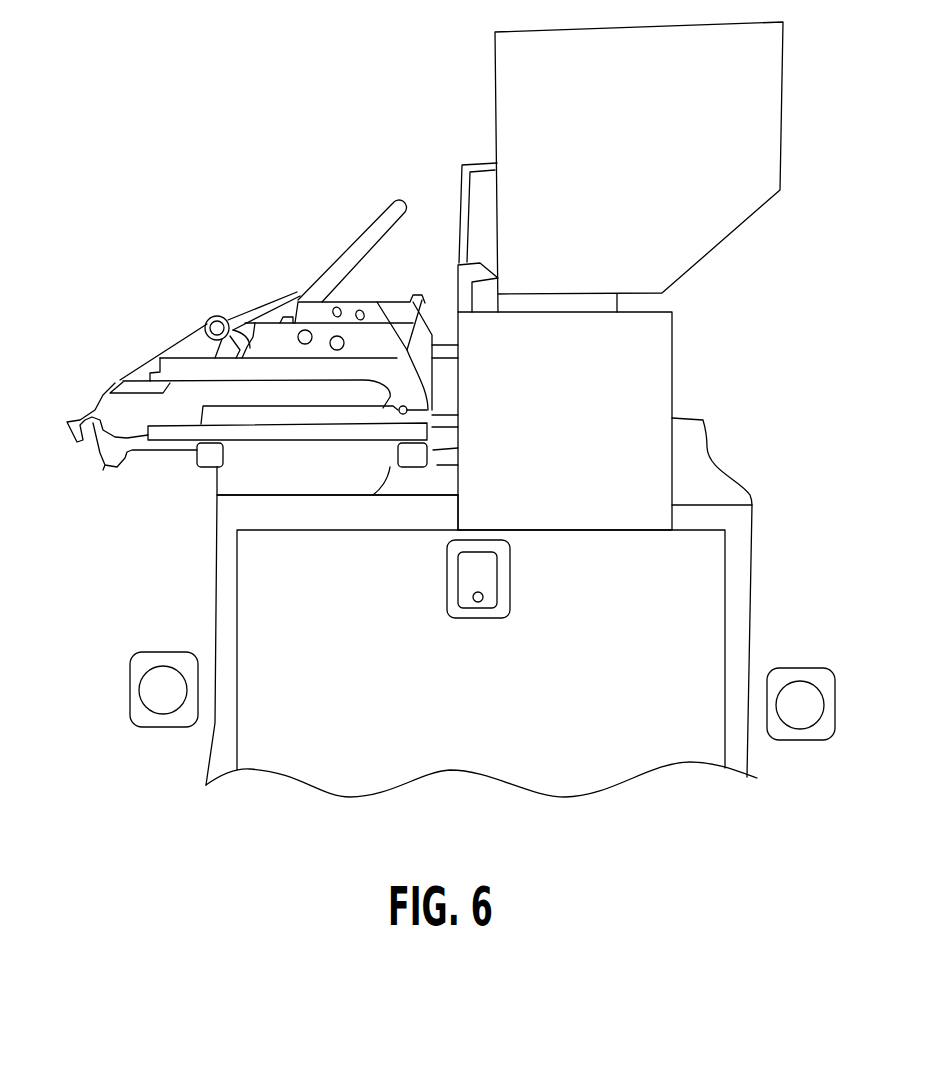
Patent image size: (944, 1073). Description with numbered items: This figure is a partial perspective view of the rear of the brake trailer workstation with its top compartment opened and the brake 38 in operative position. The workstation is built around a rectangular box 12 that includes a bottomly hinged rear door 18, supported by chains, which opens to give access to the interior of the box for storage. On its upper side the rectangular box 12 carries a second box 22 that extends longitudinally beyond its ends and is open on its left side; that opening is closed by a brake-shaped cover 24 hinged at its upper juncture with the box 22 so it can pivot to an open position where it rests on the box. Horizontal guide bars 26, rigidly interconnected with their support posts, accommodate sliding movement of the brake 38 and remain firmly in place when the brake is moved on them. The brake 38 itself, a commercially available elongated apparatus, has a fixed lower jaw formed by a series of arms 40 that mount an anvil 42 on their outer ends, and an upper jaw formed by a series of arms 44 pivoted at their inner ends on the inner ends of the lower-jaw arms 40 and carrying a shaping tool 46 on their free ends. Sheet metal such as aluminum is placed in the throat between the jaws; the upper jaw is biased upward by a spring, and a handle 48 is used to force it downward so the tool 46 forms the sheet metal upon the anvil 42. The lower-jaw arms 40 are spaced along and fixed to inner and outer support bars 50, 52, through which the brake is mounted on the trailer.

The rectangular box 12 is at (738, 538).
The rear door 18 is at (381, 662).
The box 22 is at (578, 386).
The brake-shaped cover 24 is at (641, 154).
The horizontal guide bars 26 is at (688, 437).
The brake 38 is at (355, 220).
The arms 40 is at (188, 470).
The anvil 42 is at (104, 462).
The arms 44 is at (198, 368).
The shaping tool 46 is at (133, 383).
The handle 48 is at (352, 250).
The inner support bar 50 is at (390, 470).
The outer support bar 52 is at (207, 470).